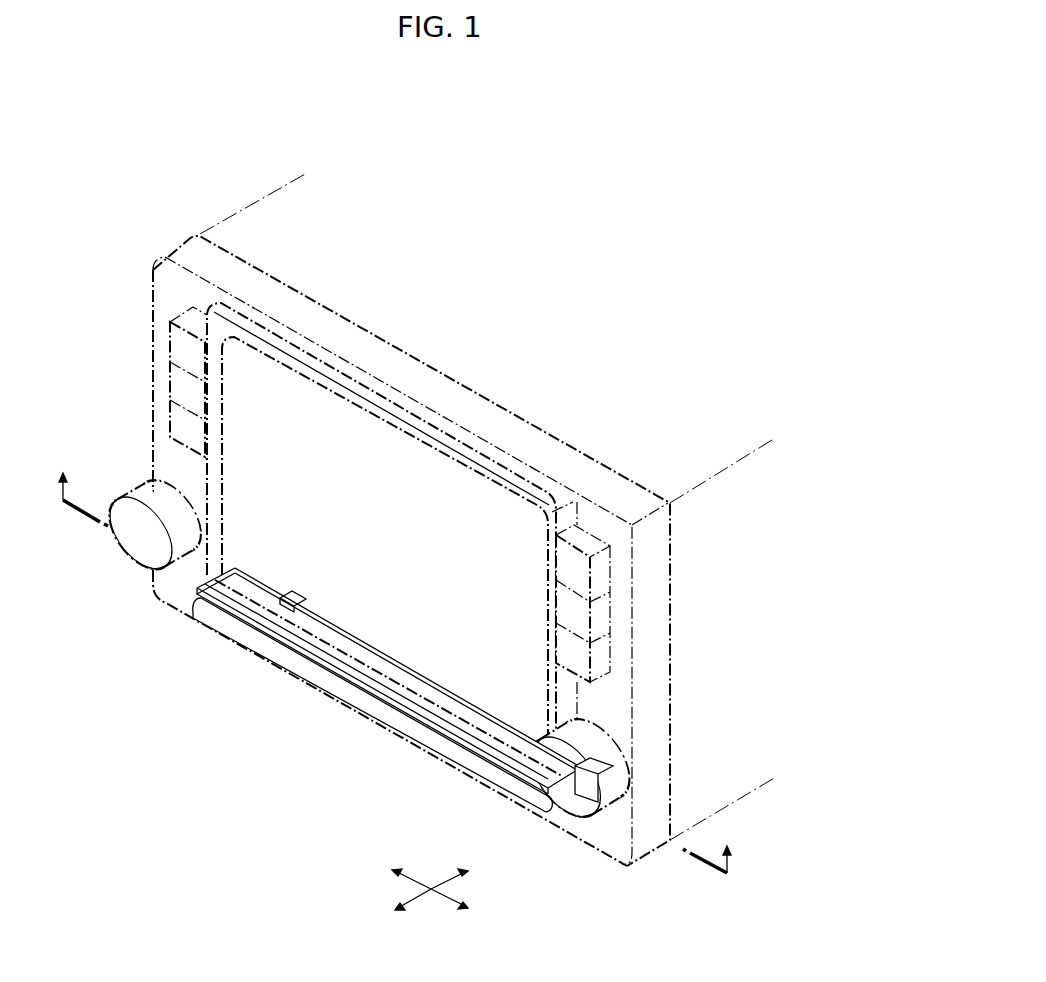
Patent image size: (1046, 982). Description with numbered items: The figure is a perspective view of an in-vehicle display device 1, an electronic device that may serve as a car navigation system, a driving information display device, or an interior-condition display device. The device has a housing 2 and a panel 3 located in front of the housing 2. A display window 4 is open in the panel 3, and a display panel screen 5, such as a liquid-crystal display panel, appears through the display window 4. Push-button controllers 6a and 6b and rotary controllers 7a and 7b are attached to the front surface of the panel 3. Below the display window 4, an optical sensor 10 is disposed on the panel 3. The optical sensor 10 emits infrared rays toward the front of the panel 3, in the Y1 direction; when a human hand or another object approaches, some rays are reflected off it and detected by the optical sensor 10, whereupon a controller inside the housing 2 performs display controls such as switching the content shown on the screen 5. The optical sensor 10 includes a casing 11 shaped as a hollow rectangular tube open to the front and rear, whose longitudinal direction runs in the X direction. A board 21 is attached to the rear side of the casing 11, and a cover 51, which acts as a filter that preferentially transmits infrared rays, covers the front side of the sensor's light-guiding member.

The in-vehicle display device 1 is at (378, 184).
The housing 2 is at (279, 207).
The panel 3 is at (190, 262).
The display window 4 is at (406, 455).
The display panel screen 5 is at (352, 455).
The push-button controller 6a is at (602, 655).
The push-button controller 6b is at (182, 428).
The rotary controller 7a is at (594, 752).
The rotary controller 7b is at (138, 556).
The optical sensor 10 is at (423, 740).
The casing 11 is at (323, 613).
The board 21 is at (393, 657).
The cover 51 is at (308, 667).